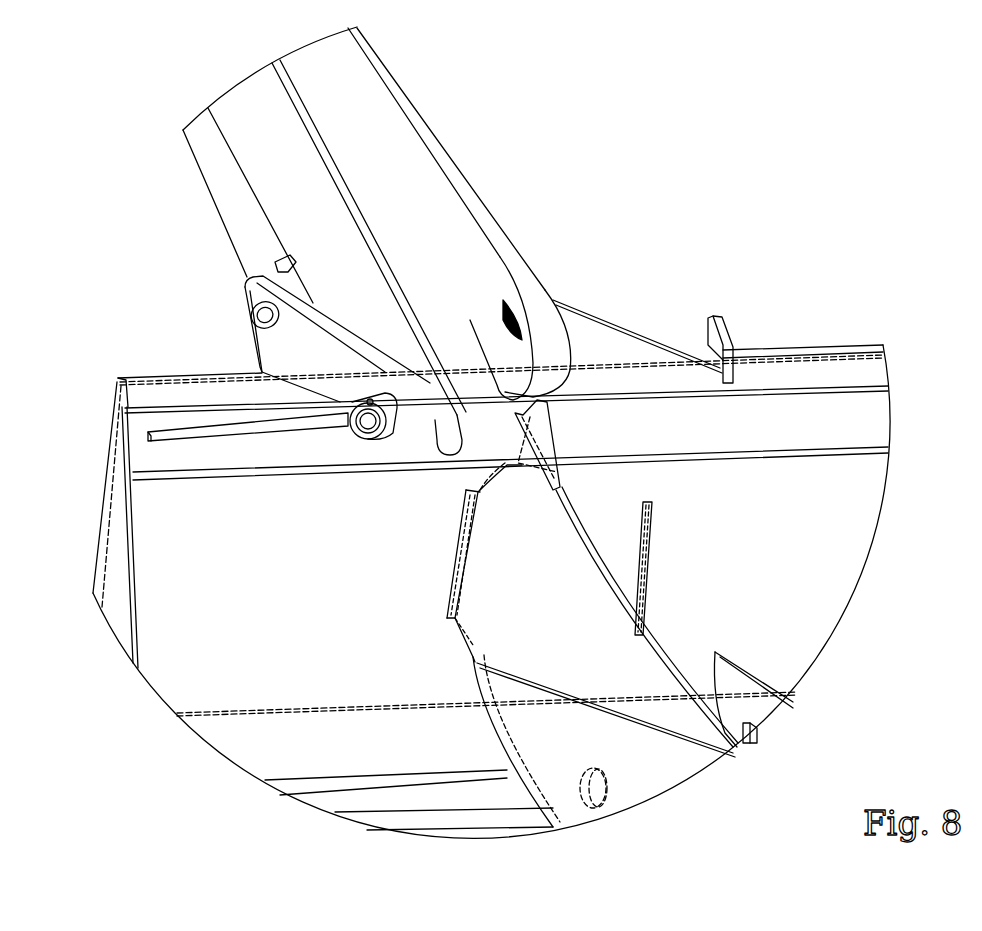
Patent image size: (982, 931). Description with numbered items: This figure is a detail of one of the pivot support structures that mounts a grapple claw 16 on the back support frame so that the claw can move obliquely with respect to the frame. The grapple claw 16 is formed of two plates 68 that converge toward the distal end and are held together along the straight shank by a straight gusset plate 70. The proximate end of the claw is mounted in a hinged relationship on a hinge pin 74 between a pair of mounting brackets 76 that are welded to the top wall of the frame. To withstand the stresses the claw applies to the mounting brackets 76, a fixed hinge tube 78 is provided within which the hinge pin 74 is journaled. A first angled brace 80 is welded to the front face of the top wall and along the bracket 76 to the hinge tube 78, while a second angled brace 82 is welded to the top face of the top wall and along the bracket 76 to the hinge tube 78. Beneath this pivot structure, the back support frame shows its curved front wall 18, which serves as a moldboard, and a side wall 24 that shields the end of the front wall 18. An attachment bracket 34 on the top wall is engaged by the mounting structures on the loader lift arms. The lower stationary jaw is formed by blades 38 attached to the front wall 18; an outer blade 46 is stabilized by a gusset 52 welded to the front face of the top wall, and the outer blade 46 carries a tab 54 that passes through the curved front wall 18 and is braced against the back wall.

The grapple claw 16 is at (392, 87).
The curved front wall 18 is at (222, 602).
The side wall 24 is at (118, 530).
The attachment bracket 34 is at (720, 323).
The blade 38 is at (623, 602).
The outer blade 46 is at (586, 512).
The gusset 52 is at (552, 435).
The tab 54 is at (462, 603).
The plate 68 is at (357, 213).
The straight gusset plate 70 is at (422, 282).
The hinge pin 74 is at (362, 427).
The mounting bracket 76 is at (430, 350).
The hinge tube 78 is at (382, 423).
The first angled brace 80 is at (270, 423).
The second angled brace 82 is at (615, 323).